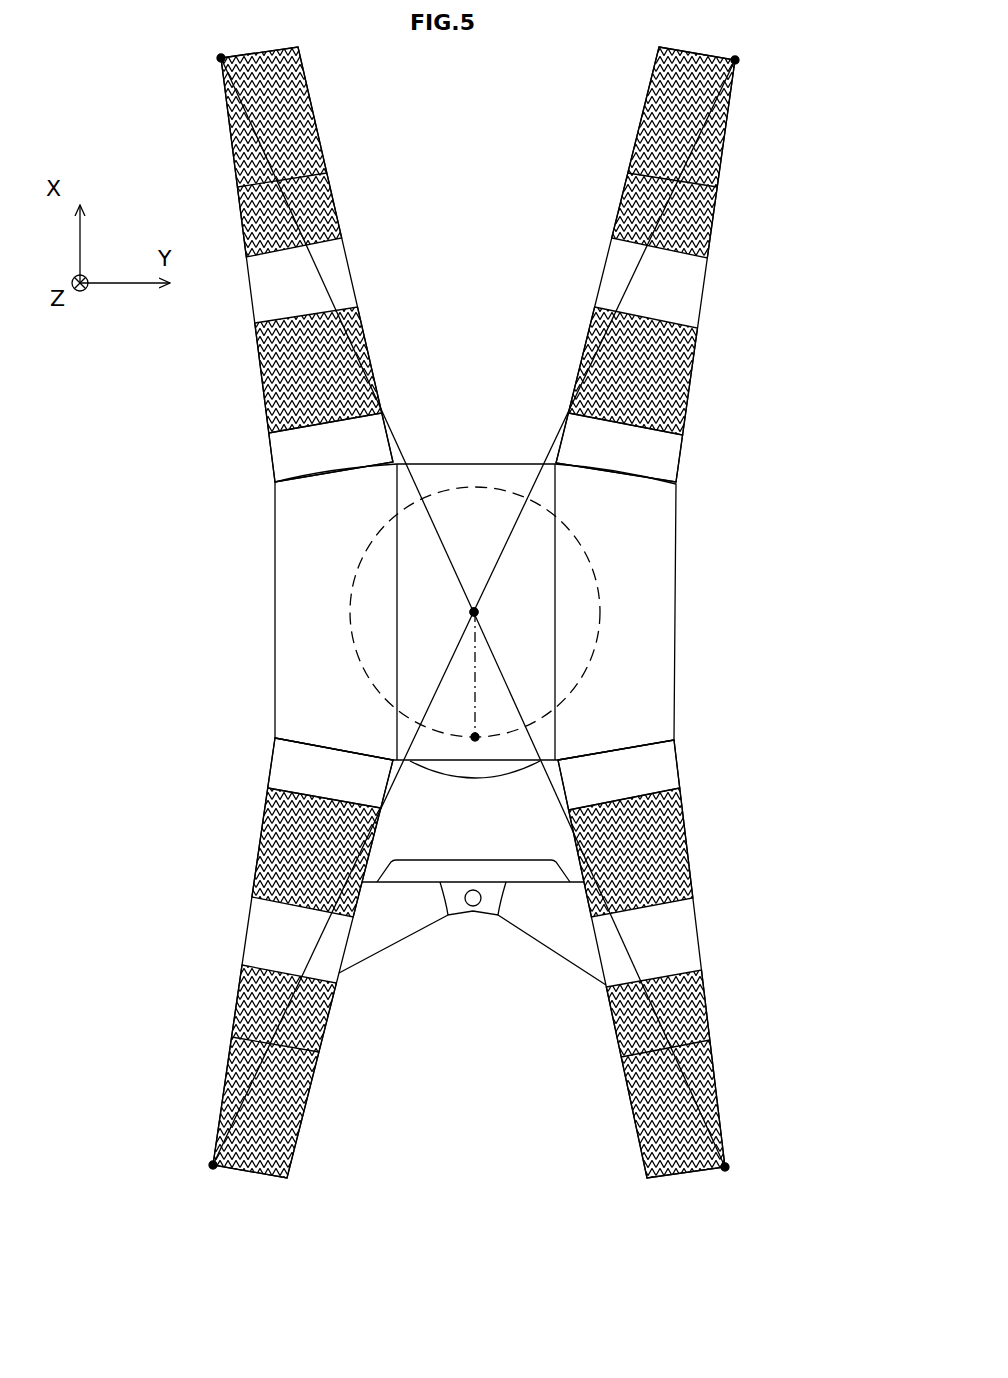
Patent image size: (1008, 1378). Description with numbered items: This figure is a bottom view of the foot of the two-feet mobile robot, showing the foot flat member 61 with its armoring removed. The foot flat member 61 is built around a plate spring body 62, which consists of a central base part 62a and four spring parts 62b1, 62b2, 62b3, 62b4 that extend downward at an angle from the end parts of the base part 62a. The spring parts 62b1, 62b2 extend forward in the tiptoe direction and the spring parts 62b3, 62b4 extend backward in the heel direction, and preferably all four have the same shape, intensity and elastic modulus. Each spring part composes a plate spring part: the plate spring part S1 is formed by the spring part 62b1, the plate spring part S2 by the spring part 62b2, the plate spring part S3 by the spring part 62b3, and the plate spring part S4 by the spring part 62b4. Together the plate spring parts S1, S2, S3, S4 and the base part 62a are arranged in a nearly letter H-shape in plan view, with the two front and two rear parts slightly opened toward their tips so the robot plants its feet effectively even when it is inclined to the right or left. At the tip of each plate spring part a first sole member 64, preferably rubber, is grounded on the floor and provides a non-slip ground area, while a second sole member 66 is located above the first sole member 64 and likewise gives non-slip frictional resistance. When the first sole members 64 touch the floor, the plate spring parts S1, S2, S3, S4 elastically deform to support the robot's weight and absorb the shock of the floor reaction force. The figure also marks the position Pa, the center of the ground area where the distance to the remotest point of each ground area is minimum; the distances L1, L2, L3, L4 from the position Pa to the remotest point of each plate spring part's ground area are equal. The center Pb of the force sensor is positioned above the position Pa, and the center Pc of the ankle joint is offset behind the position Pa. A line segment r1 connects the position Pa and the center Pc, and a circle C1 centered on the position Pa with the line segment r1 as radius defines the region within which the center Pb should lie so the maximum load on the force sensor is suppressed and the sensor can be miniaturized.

The foot flat member 61 is at (234, 630).
The plate spring body 62 is at (716, 632).
The base part 62a is at (645, 588).
The spring part 62b1 is at (282, 468).
The spring part 62b2 is at (680, 472).
The spring part 62b3 is at (278, 768).
The spring part 62b4 is at (680, 762).
The first sole member 64 is at (240, 142).
The second sole member 66 is at (275, 382).
The plate spring part S1 is at (200, 336).
The plate spring part S2 is at (733, 320).
The plate spring part S3 is at (213, 862).
The plate spring part S4 is at (733, 862).
The distance L1 is at (347, 335).
The distance L2 is at (605, 336).
The distance L3 is at (343, 888).
The distance L4 is at (600, 889).
The circle C1 is at (600, 650).
The line segment r1 is at (491, 674).
The position Pa is at (510, 614).
The center of the force sensor Pb is at (474, 612).
The center of the ankle joint Pc is at (459, 750).